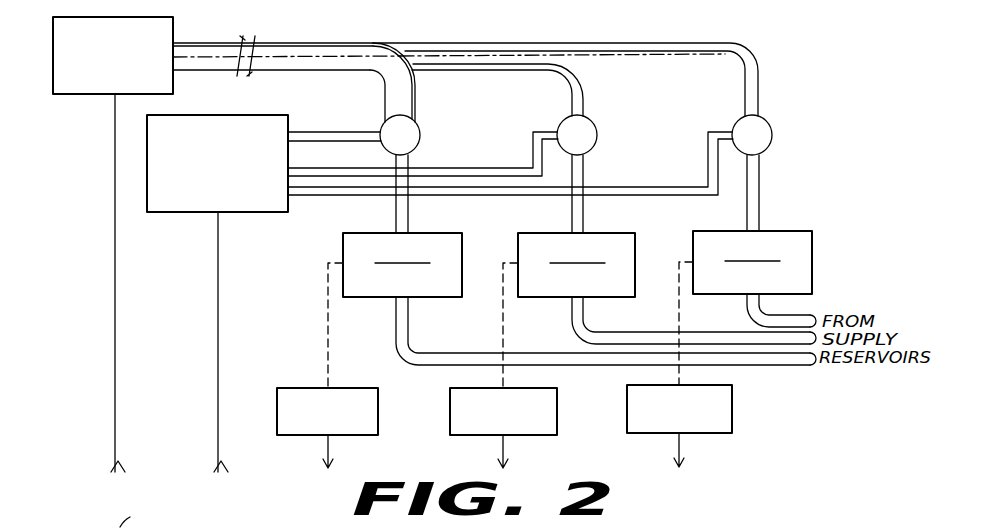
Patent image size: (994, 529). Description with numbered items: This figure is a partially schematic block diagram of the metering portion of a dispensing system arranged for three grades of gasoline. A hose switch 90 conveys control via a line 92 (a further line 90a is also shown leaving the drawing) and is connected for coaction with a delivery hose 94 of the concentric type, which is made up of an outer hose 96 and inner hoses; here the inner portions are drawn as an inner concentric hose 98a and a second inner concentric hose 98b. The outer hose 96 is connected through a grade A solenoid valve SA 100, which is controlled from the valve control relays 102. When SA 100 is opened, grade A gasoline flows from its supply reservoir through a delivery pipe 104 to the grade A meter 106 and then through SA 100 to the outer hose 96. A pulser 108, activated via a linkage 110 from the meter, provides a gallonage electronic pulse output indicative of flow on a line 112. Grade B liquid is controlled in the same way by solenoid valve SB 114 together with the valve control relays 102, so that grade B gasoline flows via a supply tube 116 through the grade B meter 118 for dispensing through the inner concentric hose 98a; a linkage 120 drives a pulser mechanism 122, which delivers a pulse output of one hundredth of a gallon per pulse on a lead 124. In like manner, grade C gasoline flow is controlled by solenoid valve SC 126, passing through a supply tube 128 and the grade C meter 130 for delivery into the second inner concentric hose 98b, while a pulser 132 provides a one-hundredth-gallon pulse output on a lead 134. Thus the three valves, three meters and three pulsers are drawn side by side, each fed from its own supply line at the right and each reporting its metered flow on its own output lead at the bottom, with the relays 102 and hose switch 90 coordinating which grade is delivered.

The hose switch 90 is at (173, 32).
The hose switch line continuation 90a is at (142, 521).
The line 92 is at (115, 268).
The delivery hose 94 is at (292, 42).
The outer hose 96 is at (363, 50).
The inner concentric hose 98a is at (485, 48).
The second inner concentric hose 98b is at (497, 66).
The grade A solenoid valve SA 100 is at (418, 126).
The valve control relays 102 is at (242, 115).
The delivery pipe 104 is at (745, 357).
The grade A meter 106 is at (423, 233).
The pulser 108 is at (350, 388).
The linkage 110 is at (333, 335).
The line 112 is at (328, 446).
The solenoid valve SB 114 is at (597, 127).
The supply tube 116 is at (732, 335).
The grade B meter 118 is at (603, 233).
The linkage 120 is at (503, 336).
The pulser mechanism 122 is at (532, 386).
The lead 124 is at (503, 446).
The solenoid valve SC 126 is at (772, 130).
The supply tube 128 is at (797, 320).
The grade C meter 130 is at (773, 230).
The pulser 132 is at (732, 422).
The lead 134 is at (678, 445).